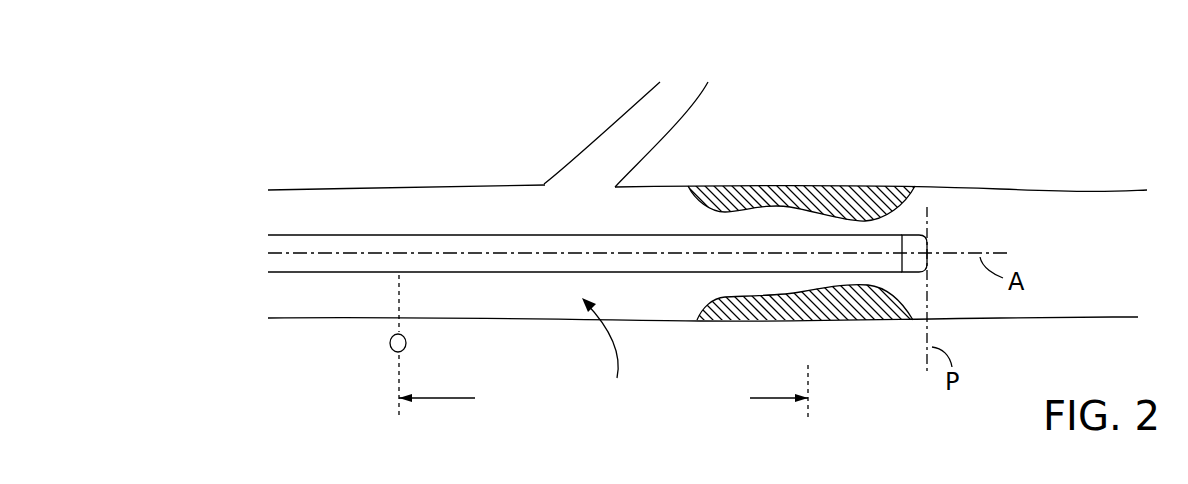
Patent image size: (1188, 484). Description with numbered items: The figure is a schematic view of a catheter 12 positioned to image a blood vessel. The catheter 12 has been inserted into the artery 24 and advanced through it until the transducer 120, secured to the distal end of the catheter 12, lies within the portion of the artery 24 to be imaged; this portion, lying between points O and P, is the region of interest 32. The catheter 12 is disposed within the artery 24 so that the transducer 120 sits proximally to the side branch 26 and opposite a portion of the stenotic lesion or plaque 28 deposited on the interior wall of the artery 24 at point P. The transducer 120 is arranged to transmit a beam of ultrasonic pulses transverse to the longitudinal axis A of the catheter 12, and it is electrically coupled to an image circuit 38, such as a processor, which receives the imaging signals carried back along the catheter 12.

The catheter 12 is at (512, 234).
The artery 24 is at (367, 186).
The side branch 26 is at (676, 92).
The plaque 28 is at (820, 188).
The region of interest 32 is at (599, 346).
The image circuit 38 is at (197, 247).
The transducer 120 is at (930, 248).